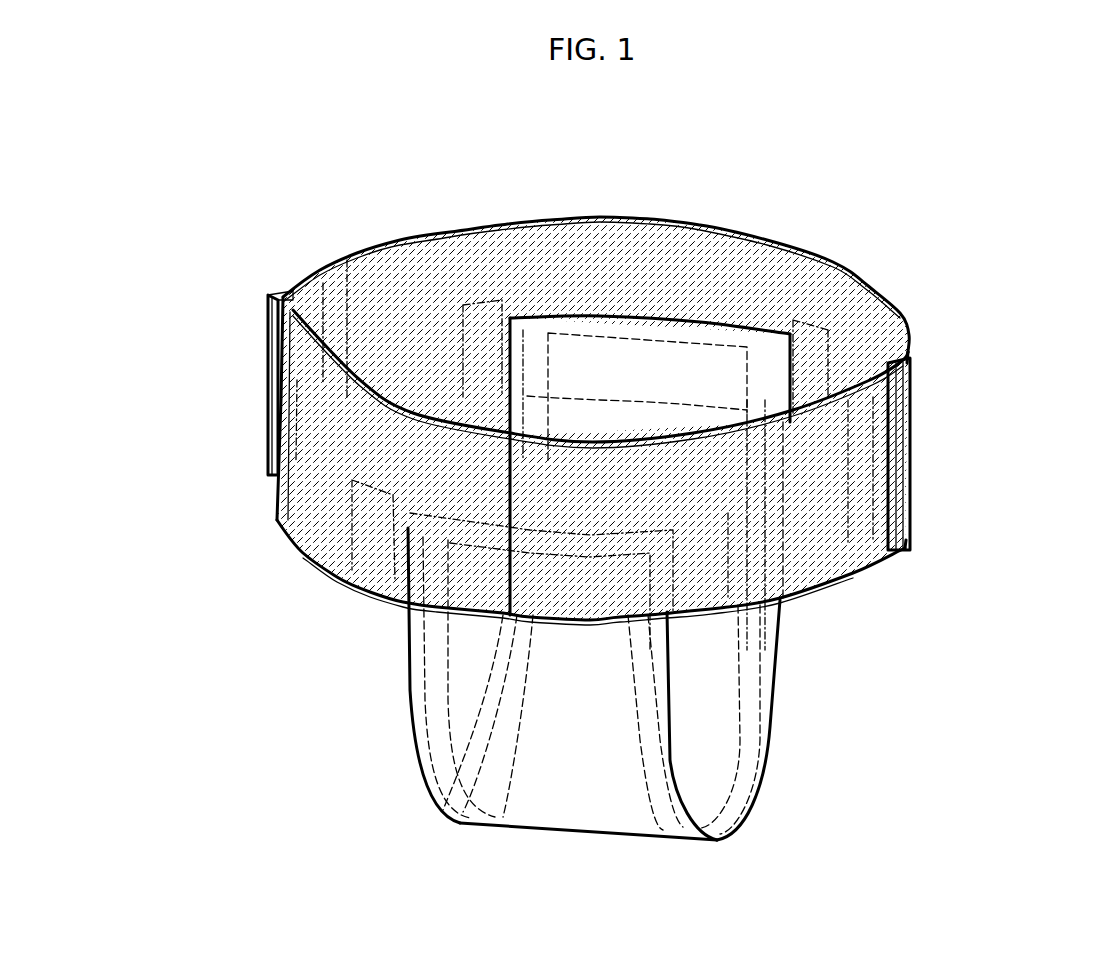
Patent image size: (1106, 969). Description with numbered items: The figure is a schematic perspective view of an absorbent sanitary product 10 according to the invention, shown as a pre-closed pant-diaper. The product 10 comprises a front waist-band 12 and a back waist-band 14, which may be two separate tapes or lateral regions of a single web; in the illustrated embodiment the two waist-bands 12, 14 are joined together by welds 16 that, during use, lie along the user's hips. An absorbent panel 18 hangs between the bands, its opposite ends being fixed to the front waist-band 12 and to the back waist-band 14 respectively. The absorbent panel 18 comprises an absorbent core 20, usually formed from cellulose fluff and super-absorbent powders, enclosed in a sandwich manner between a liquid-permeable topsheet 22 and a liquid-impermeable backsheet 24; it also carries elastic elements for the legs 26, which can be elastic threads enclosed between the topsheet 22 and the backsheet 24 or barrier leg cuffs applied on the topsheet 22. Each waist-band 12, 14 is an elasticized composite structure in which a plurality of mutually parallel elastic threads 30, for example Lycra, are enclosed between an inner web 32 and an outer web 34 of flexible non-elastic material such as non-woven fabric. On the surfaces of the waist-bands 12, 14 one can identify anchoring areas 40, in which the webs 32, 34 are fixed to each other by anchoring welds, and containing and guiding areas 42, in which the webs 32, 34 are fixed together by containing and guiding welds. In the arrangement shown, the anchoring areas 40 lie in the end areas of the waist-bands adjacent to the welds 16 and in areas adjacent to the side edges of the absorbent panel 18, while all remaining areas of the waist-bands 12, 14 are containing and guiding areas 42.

The absorbent sanitary product 10 is at (1026, 215).
The front waist-band 12 is at (274, 576).
The back waist-band 14 is at (781, 224).
The welds 16 is at (268, 420).
The absorbent panel 18 is at (405, 791).
The absorbent core 20 is at (620, 328).
The liquid-permeable topsheet 22 is at (705, 748).
The liquid-impermeable backsheet 24 is at (573, 802).
The elastic elements for the legs 26 is at (528, 414).
The elastic threads 30 is at (555, 305).
The inner web 32 is at (838, 280).
The outer web 34 is at (912, 336).
The anchoring areas 40 is at (480, 323).
The containing and guiding areas 42 is at (388, 280).